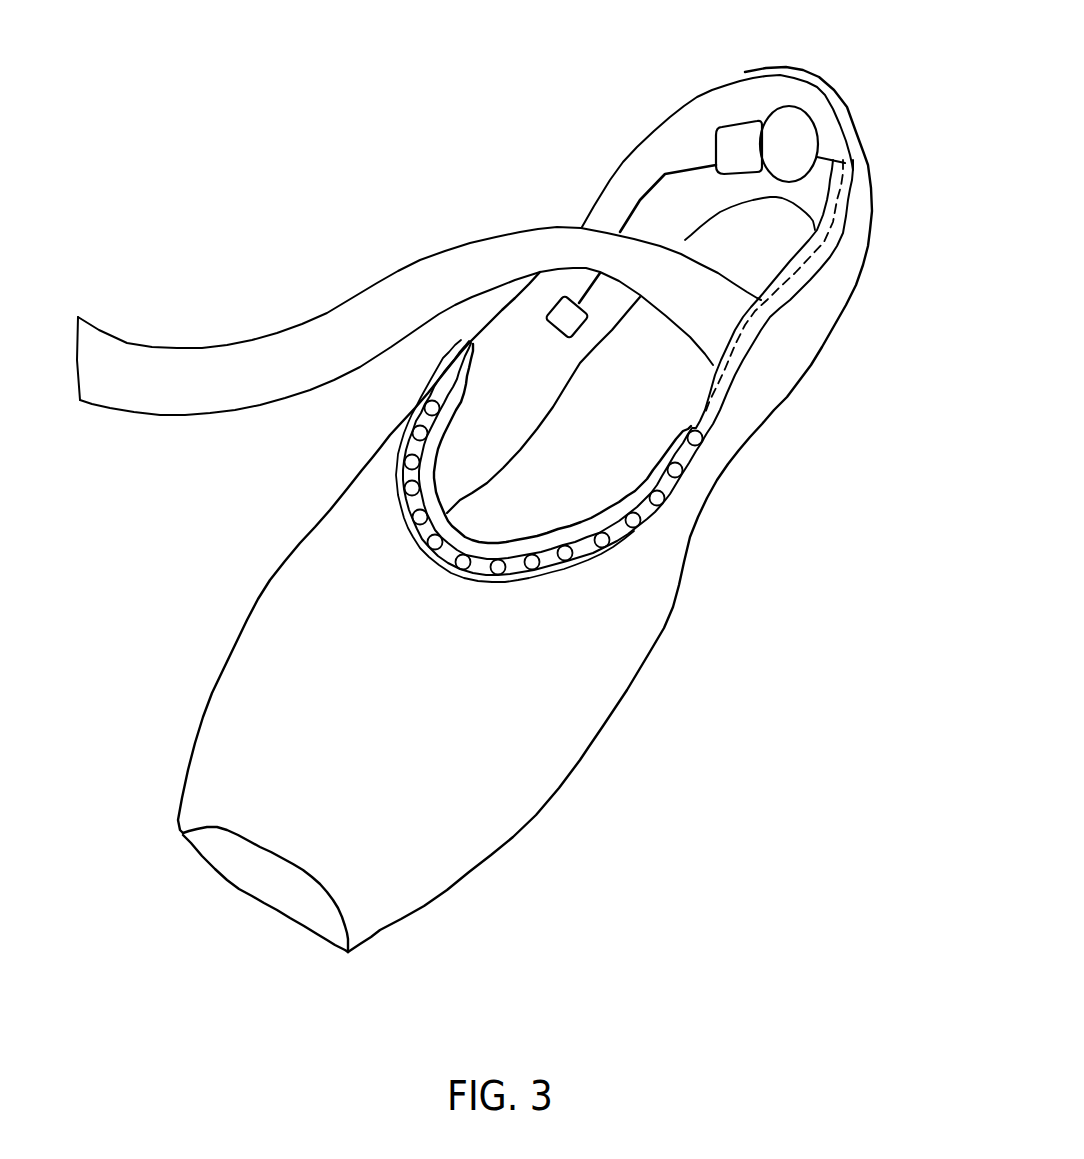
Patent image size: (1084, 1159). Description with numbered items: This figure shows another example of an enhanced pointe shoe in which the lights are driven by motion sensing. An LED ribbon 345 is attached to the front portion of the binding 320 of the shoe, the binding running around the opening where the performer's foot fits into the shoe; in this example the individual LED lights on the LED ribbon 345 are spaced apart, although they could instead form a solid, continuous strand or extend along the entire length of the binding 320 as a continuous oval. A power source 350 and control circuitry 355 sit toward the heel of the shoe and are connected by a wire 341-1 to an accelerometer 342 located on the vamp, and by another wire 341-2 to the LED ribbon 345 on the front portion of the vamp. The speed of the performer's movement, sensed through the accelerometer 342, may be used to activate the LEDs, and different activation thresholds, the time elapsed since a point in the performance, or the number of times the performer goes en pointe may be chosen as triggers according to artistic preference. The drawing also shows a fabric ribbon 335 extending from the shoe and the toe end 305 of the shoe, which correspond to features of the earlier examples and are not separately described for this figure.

The toe box 305 is at (327, 928).
The binding 320 is at (650, 520).
The ribbon 335 is at (157, 400).
The wire 341-1 is at (638, 198).
The another wire 341-2 is at (742, 335).
The accelerometer 342 is at (563, 322).
The LED ribbon 345 is at (518, 570).
The power source 350 is at (788, 137).
The control circuitry 355 is at (743, 137).